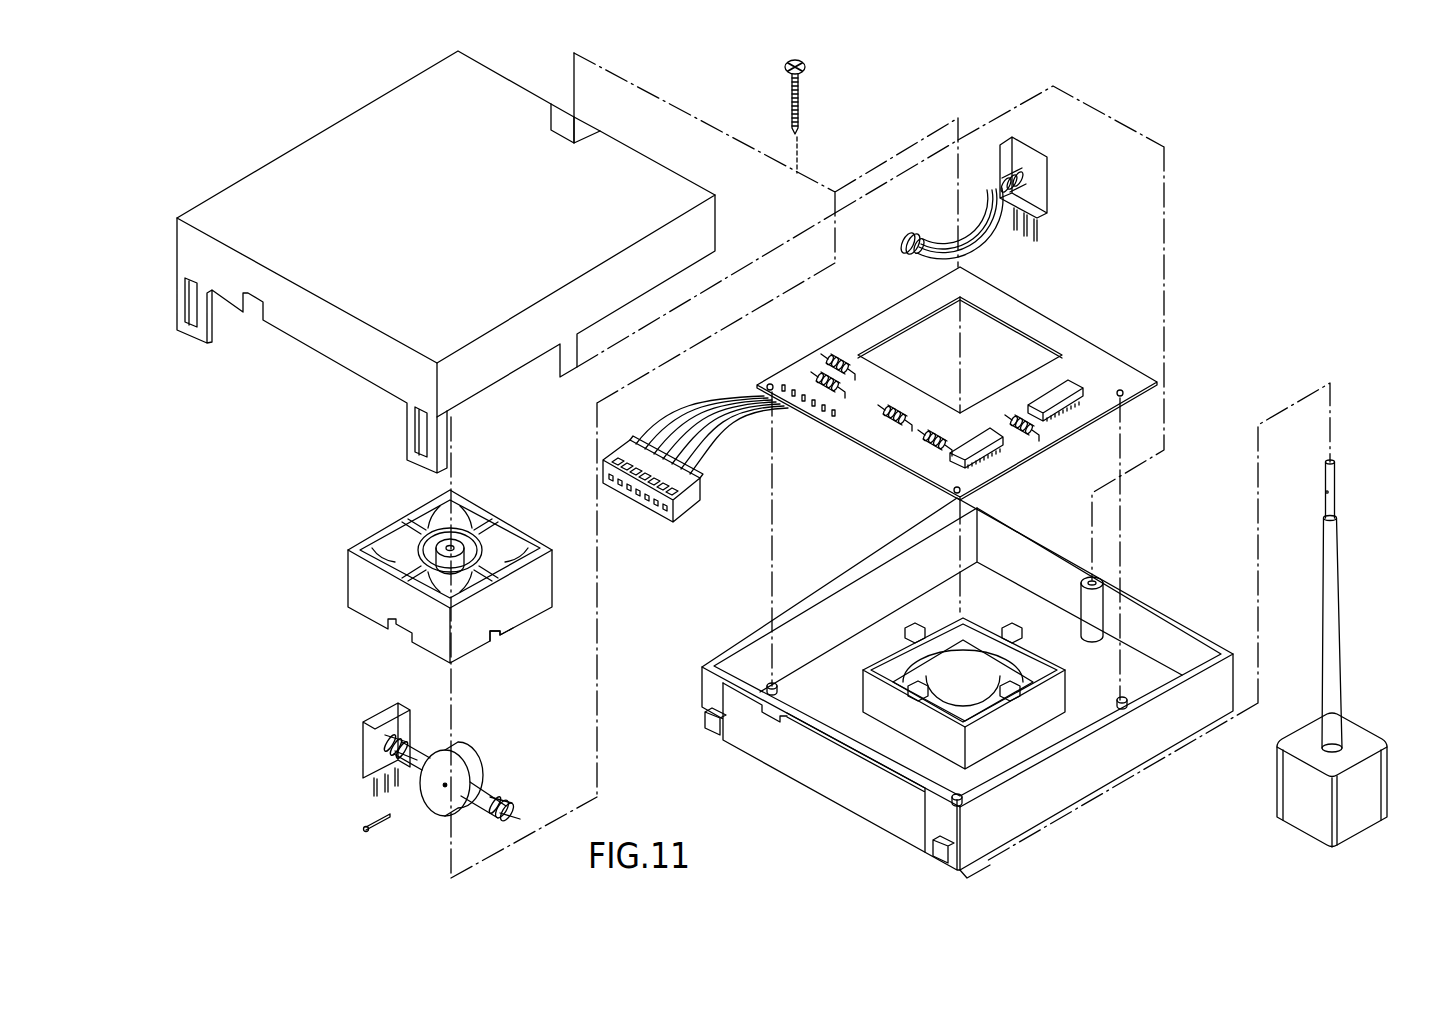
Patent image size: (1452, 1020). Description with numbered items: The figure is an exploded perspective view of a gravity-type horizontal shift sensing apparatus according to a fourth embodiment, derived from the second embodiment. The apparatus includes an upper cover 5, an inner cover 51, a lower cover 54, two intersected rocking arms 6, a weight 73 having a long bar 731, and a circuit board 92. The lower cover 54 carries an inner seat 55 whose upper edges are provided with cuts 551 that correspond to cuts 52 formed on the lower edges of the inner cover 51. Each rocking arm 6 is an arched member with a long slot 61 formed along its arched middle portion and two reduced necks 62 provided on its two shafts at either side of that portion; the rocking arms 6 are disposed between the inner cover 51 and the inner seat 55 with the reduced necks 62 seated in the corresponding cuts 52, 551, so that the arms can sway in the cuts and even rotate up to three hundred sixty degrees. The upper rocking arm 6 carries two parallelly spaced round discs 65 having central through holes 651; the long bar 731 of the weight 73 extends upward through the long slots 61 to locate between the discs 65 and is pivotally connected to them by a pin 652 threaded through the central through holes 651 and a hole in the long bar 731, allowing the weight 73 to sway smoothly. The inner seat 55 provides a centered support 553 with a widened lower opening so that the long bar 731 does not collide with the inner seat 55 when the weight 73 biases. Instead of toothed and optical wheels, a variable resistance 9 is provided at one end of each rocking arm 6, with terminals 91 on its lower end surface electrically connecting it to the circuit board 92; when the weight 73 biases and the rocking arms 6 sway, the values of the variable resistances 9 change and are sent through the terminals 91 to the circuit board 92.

The upper cover 5 is at (345, 172).
The inner cover 51 is at (493, 520).
The cuts 52 is at (505, 629).
The lower cover 54 is at (863, 792).
The inner seat 55 is at (883, 698).
The cuts 551 is at (1013, 690).
The centered support 553 is at (987, 670).
The rocking arm 6 is at (903, 240).
The long slot 61 is at (980, 240).
The reduced necks 62 is at (407, 742).
The round discs 65 is at (466, 768).
The central through holes 651 is at (445, 785).
The pin 652 is at (365, 829).
The weight 73 is at (1355, 748).
The long bar 731 is at (1332, 567).
The variable resistance 9 is at (387, 717).
The terminals 91 is at (375, 787).
The circuit board 92 is at (867, 443).